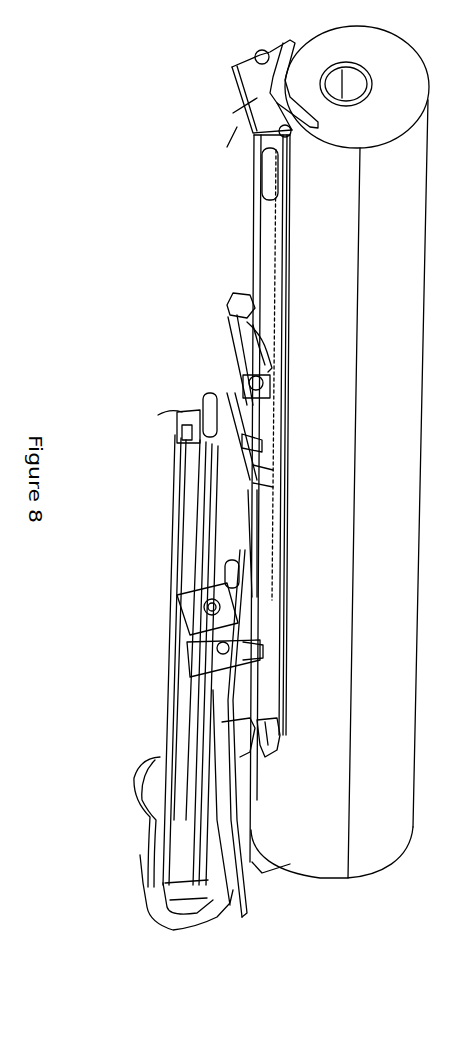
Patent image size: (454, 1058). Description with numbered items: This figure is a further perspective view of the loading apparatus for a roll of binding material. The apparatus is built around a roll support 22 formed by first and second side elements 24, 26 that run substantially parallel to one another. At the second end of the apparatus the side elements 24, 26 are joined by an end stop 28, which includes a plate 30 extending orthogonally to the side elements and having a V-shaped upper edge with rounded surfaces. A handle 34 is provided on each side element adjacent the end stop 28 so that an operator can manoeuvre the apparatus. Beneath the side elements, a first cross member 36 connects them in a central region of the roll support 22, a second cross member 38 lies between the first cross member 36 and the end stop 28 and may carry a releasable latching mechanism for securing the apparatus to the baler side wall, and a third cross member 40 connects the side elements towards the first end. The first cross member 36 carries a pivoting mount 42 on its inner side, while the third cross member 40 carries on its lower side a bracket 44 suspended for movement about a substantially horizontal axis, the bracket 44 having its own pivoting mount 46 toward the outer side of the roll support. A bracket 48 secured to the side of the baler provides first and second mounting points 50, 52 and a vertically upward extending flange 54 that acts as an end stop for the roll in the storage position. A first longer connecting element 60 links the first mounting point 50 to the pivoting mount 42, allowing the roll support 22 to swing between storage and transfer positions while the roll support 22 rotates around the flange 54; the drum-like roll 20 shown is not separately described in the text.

The roller 20 is at (398, 498).
The roll support 22 is at (253, 850).
The first side element 24 is at (253, 248).
The second side element 26 is at (288, 266).
The end stop 28 is at (219, 83).
The plate 30 is at (233, 113).
The handle 34 is at (252, 165).
The first cross member 36 is at (230, 360).
The second cross member 38 is at (183, 415).
The third cross member 40 is at (243, 608).
The pivoting mount 42 is at (263, 442).
The bracket 44 is at (185, 615).
The pivoting mount 46 is at (172, 658).
The bracket 48 is at (207, 737).
The first mounting point 50 is at (147, 805).
The second mounting point 52 is at (203, 880).
The flange 54 is at (177, 853).
The first longer connecting element 60 is at (185, 505).